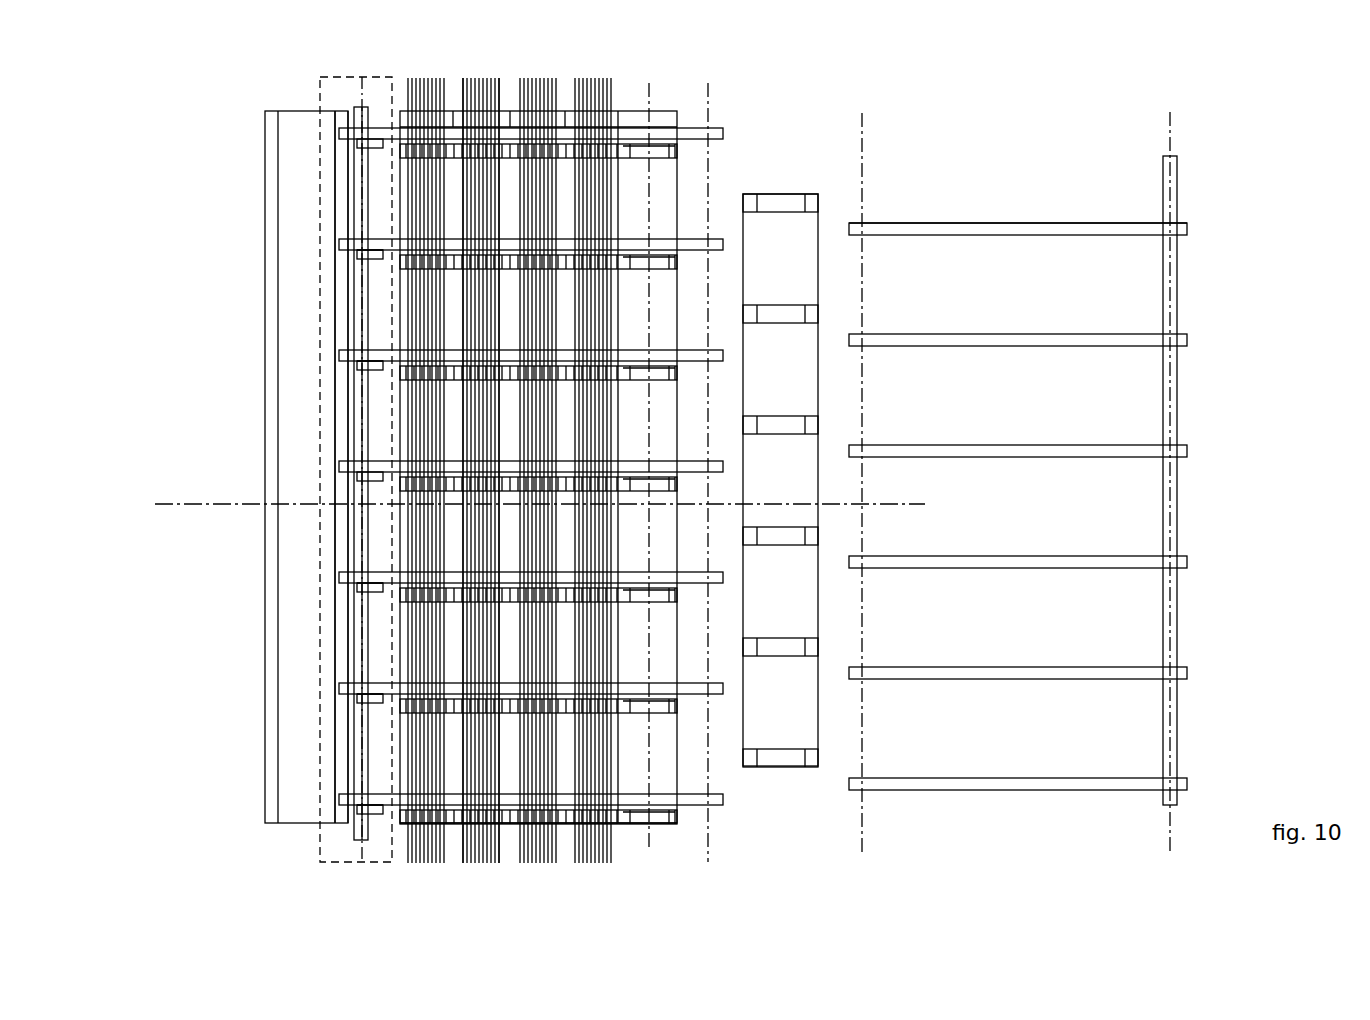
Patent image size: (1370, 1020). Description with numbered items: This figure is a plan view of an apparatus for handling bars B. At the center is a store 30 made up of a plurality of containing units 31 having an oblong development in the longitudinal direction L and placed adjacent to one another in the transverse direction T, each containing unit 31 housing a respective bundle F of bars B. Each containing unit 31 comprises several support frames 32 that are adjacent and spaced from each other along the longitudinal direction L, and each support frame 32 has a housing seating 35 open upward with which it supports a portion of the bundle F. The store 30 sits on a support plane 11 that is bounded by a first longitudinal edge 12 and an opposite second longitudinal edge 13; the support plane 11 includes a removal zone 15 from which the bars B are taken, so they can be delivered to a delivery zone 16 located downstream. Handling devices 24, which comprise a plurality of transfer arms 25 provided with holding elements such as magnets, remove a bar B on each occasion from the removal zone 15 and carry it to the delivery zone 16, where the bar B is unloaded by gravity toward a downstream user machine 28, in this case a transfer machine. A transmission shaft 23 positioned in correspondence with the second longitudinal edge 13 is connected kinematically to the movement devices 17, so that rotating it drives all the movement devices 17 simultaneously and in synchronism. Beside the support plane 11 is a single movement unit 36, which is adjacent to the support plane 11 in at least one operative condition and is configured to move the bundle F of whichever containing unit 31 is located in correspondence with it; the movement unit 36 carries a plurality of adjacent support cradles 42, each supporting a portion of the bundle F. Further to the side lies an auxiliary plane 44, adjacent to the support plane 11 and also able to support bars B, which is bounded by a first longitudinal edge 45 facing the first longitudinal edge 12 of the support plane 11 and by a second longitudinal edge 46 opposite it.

The support plane 11 is at (506, 868).
The first longitudinal edge 12 is at (708, 97).
The second longitudinal edge 13 is at (361, 173).
The removal zone 15 is at (375, 77).
The delivery zone 16 is at (344, 77).
The movement devices 17 is at (697, 140).
The transmission shaft 23 is at (358, 653).
The handling devices 24 is at (352, 256).
The transfer arms 25 is at (378, 144).
The user machine 28 is at (296, 830).
The store 30 is at (618, 103).
The containing units 31 is at (405, 785).
The support frames 32 is at (626, 152).
The housing seating 35 is at (657, 152).
The movement unit 36 is at (780, 190).
The support cradles 42 is at (780, 203).
The auxiliary plane 44 is at (1032, 180).
The first longitudinal edge 45 is at (866, 120).
The second longitudinal edge 46 is at (1172, 120).
The bars B is at (437, 88).
The bundle F is at (448, 92).
The longitudinal direction L is at (650, 425).
The transverse direction T is at (202, 504).